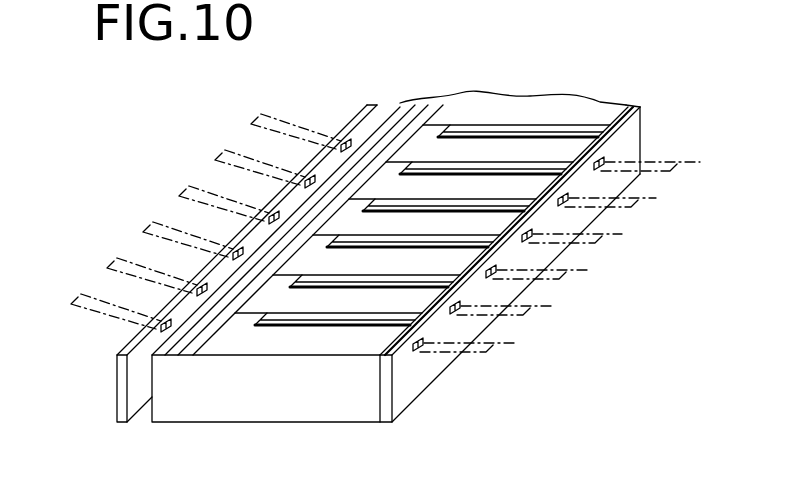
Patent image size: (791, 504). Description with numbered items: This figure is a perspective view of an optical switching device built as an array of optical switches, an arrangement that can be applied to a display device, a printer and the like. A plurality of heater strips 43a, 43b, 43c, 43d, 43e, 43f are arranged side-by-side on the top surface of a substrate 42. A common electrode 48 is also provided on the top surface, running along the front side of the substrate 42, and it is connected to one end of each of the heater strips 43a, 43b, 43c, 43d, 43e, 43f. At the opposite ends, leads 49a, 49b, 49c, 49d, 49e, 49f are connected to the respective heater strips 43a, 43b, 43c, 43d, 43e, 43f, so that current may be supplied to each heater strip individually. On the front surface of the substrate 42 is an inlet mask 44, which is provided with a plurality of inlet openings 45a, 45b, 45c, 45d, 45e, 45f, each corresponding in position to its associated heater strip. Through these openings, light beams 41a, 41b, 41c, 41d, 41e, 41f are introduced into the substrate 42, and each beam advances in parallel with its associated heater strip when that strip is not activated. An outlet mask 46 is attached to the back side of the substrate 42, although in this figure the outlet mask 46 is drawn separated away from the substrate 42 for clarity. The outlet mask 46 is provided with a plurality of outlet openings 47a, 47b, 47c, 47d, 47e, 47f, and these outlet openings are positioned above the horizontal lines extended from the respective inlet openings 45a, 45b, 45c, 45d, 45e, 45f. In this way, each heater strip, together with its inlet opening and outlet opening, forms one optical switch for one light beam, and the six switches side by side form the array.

The light beam 41a is at (488, 353).
The light beam 41b is at (523, 316).
The light beam 41c is at (557, 280).
The light beam 41d is at (594, 244).
The light beam 41e is at (630, 208).
The light beam 41f is at (655, 172).
The substrate 42 is at (248, 408).
The heater strip 43a is at (323, 326).
The heater strip 43b is at (359, 288).
The heater strip 43c is at (394, 248).
The heater strip 43d is at (425, 212).
The heater strip 43e is at (450, 176).
The heater strip 43f is at (479, 138).
The inlet mask 44 is at (420, 390).
The inlet opening 45a is at (416, 353).
The inlet opening 45b is at (454, 314).
The inlet opening 45c is at (491, 280).
The inlet opening 45d is at (527, 243).
The inlet opening 45e is at (562, 207).
The inlet opening 45f is at (604, 170).
The outlet mask 46 is at (117, 392).
The outlet opening 47a is at (163, 320).
The outlet opening 47b is at (199, 284).
The outlet opening 47c is at (235, 247).
The outlet opening 47d is at (270, 212).
The outlet opening 47e is at (306, 176).
The outlet opening 47f is at (344, 139).
The common electrode 48 is at (612, 102).
The lead 49a is at (239, 315).
The lead 49b is at (263, 277).
The lead 49c is at (291, 237).
The lead 49d is at (325, 201).
The lead 49e is at (368, 164).
The lead 49f is at (416, 127).